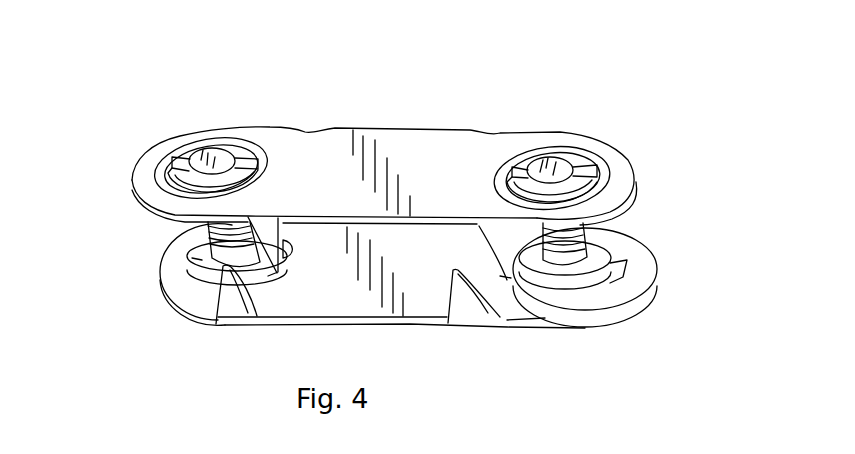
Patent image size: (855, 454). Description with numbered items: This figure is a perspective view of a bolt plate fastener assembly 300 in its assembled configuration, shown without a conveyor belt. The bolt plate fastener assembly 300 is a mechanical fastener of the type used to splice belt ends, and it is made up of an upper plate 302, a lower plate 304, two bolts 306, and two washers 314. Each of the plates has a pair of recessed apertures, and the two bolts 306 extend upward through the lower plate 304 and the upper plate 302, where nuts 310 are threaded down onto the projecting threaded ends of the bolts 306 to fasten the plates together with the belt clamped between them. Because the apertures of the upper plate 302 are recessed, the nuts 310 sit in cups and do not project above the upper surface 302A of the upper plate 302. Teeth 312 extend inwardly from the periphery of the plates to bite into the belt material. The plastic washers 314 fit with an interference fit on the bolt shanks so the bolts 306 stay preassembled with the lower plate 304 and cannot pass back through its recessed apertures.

The bolt plate fastener assembly 300 is at (219, 48).
The upper plate 302 is at (533, 132).
The upper surface of the upper plate 302A is at (317, 140).
The lower plate 304 is at (613, 310).
The bolt 306 is at (210, 225).
The nut 310 is at (187, 152).
The teeth 312 is at (228, 294).
The washer 314 is at (196, 258).